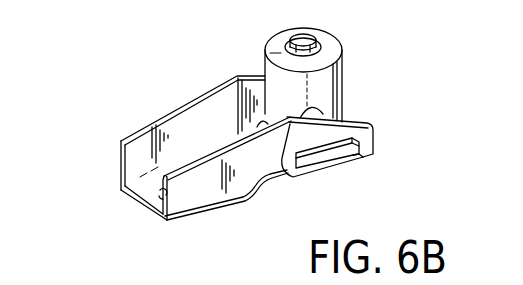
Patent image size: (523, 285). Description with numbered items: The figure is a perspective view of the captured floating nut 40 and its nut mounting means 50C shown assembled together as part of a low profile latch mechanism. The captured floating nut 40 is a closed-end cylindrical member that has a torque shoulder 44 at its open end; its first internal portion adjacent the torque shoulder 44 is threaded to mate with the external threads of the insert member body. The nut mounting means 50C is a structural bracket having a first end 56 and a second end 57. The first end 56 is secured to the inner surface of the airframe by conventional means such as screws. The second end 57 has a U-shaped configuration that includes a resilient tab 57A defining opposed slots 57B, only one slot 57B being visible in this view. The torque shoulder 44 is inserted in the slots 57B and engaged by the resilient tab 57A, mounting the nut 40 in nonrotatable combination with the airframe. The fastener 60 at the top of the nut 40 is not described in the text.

The nut mounting means 50C is at (179, 101).
The first end 56 is at (120, 189).
The captured floating nut 40 is at (344, 74).
The bolt 60 is at (320, 40).
The second end 57 is at (376, 137).
The resilient tab 57A is at (287, 140).
The opposed slots 57B is at (344, 160).
The torque shoulder 44 is at (323, 164).